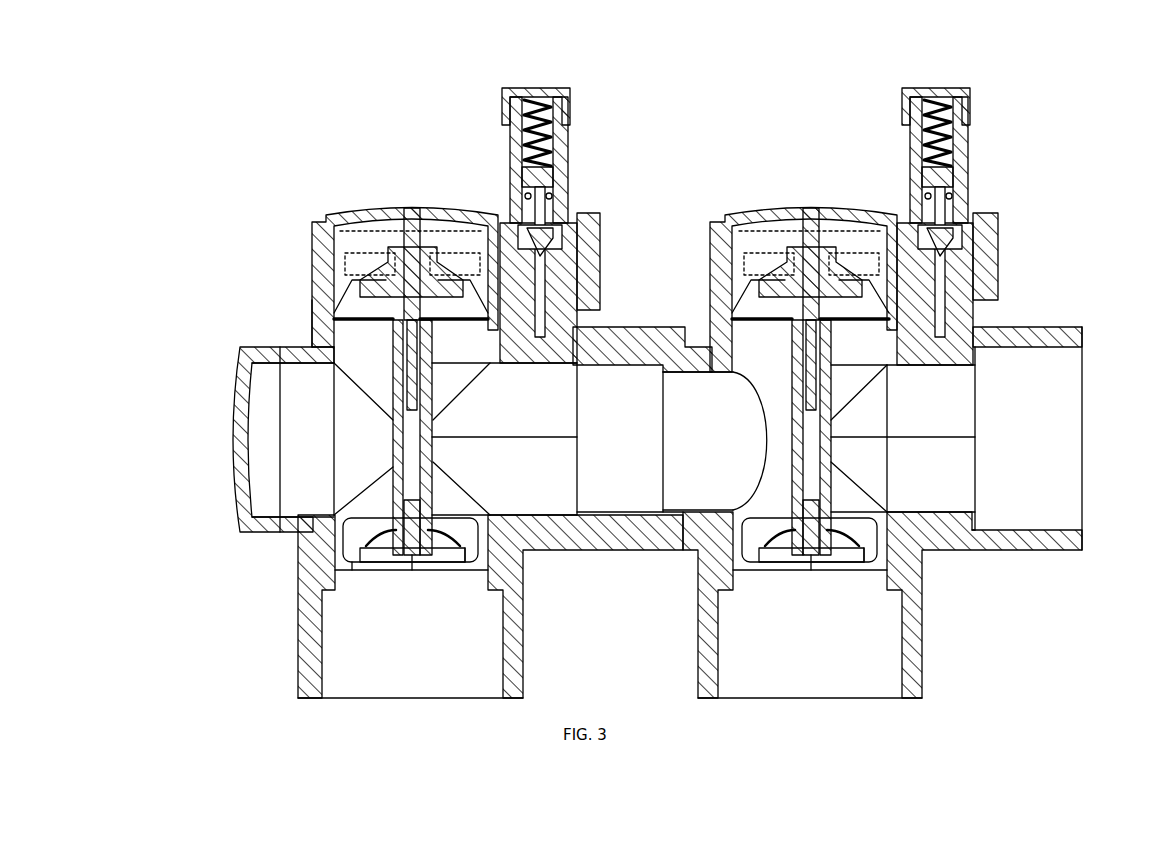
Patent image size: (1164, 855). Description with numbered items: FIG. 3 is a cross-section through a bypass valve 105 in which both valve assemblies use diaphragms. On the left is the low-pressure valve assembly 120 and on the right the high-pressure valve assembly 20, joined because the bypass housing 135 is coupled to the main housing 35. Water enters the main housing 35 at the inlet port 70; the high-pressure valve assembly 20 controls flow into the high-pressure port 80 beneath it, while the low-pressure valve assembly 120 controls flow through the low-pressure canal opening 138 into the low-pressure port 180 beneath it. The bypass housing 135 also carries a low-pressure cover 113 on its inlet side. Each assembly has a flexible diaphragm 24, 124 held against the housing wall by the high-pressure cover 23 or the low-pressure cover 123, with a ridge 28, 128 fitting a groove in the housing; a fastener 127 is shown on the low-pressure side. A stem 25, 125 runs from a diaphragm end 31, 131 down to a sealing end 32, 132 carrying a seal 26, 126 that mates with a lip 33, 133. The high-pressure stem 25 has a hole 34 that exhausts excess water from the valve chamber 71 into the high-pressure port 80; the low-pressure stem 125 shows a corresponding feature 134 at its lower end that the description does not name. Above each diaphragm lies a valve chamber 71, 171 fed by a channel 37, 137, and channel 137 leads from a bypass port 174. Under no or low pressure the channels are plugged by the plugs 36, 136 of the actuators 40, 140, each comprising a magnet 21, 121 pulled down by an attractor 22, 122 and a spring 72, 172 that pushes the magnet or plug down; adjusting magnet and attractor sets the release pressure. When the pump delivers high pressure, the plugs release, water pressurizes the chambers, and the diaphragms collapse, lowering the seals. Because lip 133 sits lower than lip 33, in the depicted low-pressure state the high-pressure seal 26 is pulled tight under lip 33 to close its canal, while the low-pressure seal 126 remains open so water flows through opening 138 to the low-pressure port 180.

The bypass valve 105 is at (657, 83).
The low-pressure valve assembly 120 is at (300, 190).
The high-pressure valve assembly 20 is at (815, 178).
The low-pressure cover 123 is at (383, 207).
The high-pressure cover 23 is at (763, 208).
The valve chamber 171 is at (360, 248).
The valve chamber 71 is at (853, 247).
The fastener 127 is at (440, 273).
The actuator 140 is at (500, 143).
The actuator 40 is at (985, 103).
The spring 172 is at (533, 100).
The spring 72 is at (930, 100).
The magnet 121 is at (563, 150).
The magnet 21 is at (945, 178).
The attractor 122 is at (540, 290).
The attractor 22 is at (958, 210).
The plug 136 is at (528, 237).
The plug 36 is at (943, 243).
The channel 137 is at (597, 222).
The channel 37 is at (937, 280).
The diaphragm 124 is at (350, 277).
The diaphragm 24 is at (753, 280).
The diaphragm end 131 is at (313, 287).
The diaphragm end 31 is at (880, 307).
The ridge 128 is at (333, 313).
The ridge 28 is at (730, 313).
The low-pressure cover 113 is at (240, 357).
The bypass housing 135 is at (630, 337).
The stem 125 is at (393, 437).
The stem 25 is at (831, 430).
The seal end 132 is at (393, 512).
The sealing end 32 is at (835, 505).
The bypass port 174 is at (520, 463).
The low-pressure canal opening 138 is at (372, 570).
The low-pressure port 180 is at (385, 675).
The high-pressure port 80 is at (780, 665).
The seal 126 is at (458, 565).
The seal 26 is at (857, 555).
The lip 133 is at (480, 572).
The lip 33 is at (740, 570).
The stem end 134 is at (412, 570).
The hole 34 is at (807, 560).
The inlet port 70 is at (1060, 397).
The main housing 35 is at (1082, 533).